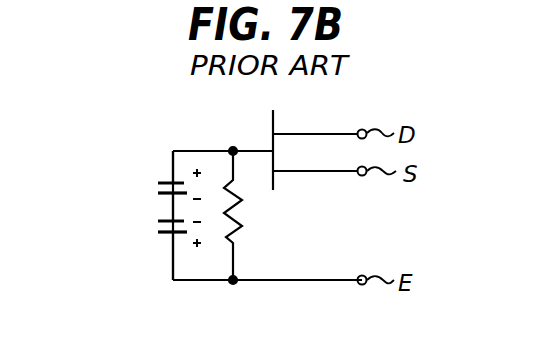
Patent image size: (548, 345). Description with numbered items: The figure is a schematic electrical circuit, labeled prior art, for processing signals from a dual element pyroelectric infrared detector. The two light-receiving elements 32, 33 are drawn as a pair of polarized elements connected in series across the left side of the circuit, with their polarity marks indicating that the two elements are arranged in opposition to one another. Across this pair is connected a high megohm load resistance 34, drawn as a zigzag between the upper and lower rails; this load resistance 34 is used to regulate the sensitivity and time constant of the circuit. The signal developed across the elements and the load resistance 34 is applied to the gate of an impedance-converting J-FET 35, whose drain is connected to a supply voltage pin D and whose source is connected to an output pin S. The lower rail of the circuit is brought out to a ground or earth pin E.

The light-receiving element 32 is at (155, 190).
The light-receiving element 33 is at (155, 229).
The load resistance 34 is at (233, 211).
The impedance-converting J-FET 35 is at (303, 133).